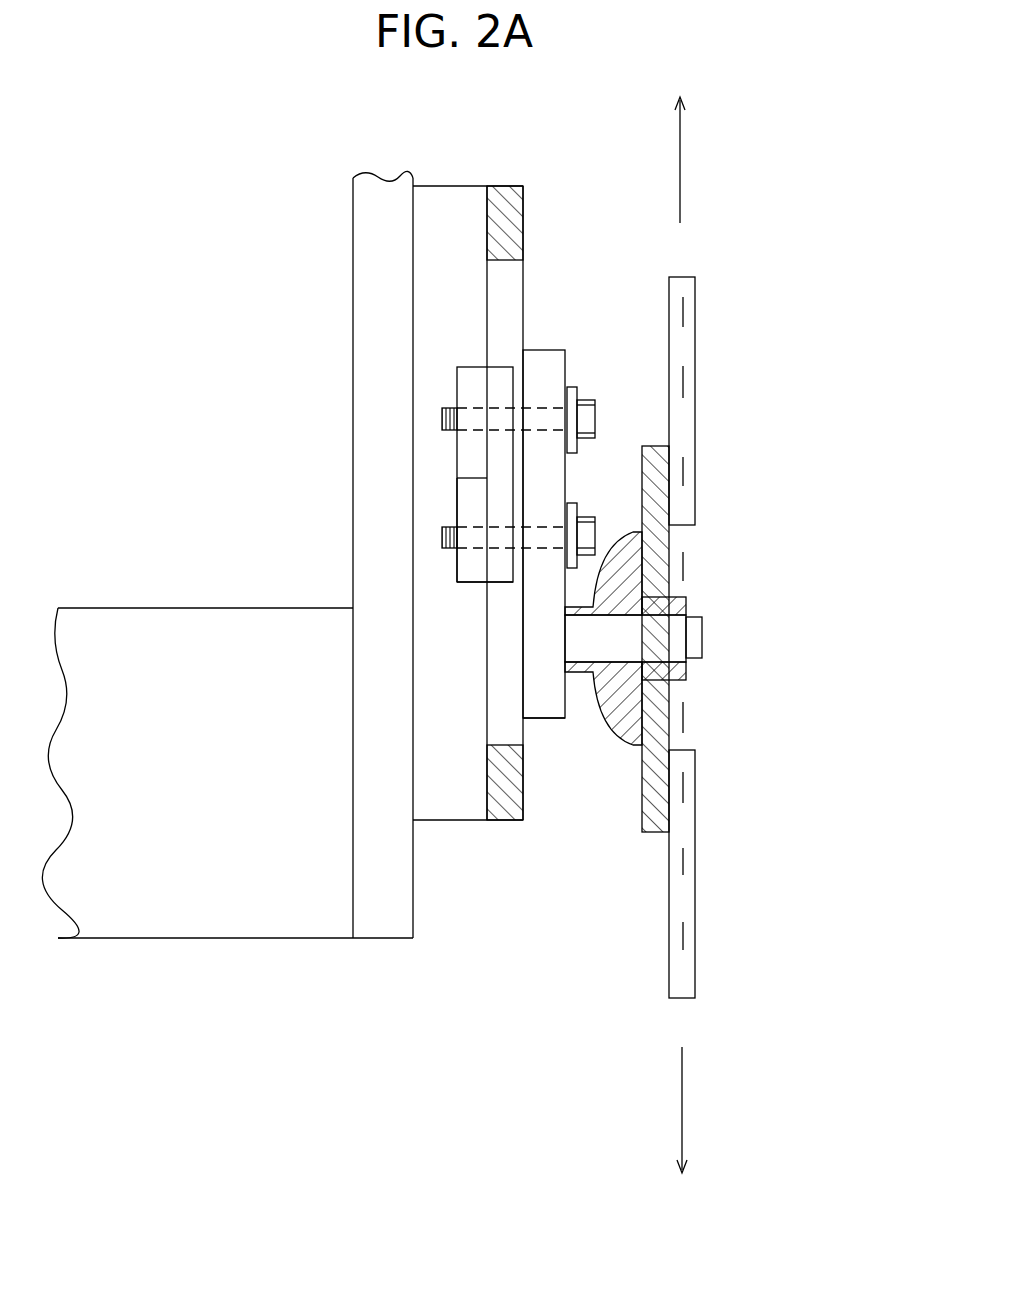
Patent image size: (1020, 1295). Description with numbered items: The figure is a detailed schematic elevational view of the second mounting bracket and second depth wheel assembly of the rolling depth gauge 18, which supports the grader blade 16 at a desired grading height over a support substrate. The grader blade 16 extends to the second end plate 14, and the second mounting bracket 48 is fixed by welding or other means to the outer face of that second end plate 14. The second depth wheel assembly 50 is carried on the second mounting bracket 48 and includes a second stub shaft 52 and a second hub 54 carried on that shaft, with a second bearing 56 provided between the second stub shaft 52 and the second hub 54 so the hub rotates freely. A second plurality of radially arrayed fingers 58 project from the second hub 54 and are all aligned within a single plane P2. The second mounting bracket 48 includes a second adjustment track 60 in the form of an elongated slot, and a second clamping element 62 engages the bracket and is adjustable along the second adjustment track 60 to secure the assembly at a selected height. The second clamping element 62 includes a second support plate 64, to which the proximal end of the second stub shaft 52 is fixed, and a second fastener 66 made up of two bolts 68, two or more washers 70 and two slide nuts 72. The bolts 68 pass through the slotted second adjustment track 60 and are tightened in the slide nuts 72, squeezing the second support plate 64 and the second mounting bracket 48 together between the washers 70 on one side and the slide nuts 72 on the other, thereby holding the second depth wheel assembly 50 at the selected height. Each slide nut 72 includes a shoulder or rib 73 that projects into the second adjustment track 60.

The second end plate 14 is at (353, 320).
The grader blade 16 is at (165, 628).
The rolling depth gauge 18 is at (780, 280).
The second mounting bracket 48 is at (517, 218).
The second depth wheel assembly 50 is at (757, 817).
The second stub shaft 52 is at (677, 638).
The second hub 54 is at (637, 783).
The second bearing 56 is at (670, 603).
The second plurality of radially arrayed fingers 58 is at (690, 375).
The second adjustment track 60 is at (500, 633).
The second clamping element 62 is at (600, 335).
The second support plate 64 is at (547, 690).
The second fastener 66 is at (643, 437).
The bolts 68 is at (587, 430).
The washers 70 is at (570, 387).
The slide nuts 72 is at (467, 389).
The shoulder or rib 73 is at (500, 565).
The single plane P2 is at (680, 162).